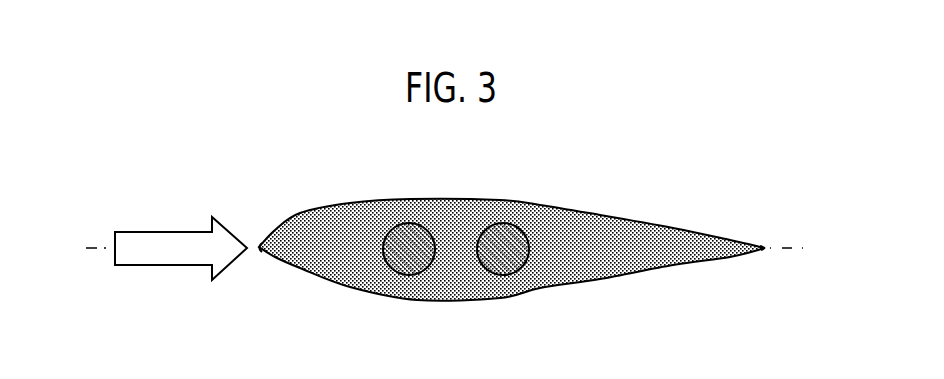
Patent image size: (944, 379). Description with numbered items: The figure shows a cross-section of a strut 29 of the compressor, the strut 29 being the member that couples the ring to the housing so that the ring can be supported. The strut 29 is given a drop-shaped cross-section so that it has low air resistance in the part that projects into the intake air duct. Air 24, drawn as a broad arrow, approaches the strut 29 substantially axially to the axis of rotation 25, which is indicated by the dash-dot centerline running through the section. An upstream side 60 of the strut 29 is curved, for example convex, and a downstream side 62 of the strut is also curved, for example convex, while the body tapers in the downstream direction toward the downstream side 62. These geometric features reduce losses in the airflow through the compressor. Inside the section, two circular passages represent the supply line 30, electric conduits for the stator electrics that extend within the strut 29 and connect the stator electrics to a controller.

The air 24 is at (143, 231).
The axis of rotation 25 is at (96, 254).
The strut 29 is at (302, 193).
The supply line 30 is at (397, 222).
The upstream side 60 is at (257, 253).
The downstream side 62 is at (768, 252).